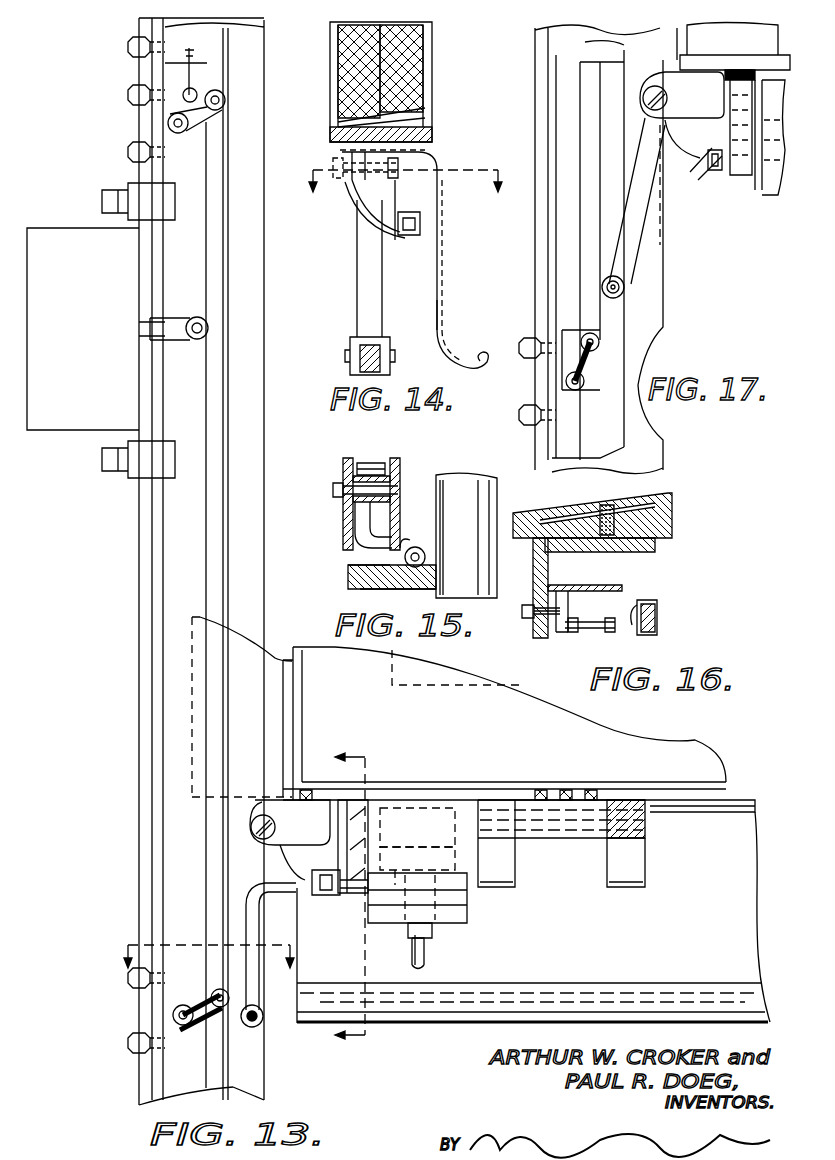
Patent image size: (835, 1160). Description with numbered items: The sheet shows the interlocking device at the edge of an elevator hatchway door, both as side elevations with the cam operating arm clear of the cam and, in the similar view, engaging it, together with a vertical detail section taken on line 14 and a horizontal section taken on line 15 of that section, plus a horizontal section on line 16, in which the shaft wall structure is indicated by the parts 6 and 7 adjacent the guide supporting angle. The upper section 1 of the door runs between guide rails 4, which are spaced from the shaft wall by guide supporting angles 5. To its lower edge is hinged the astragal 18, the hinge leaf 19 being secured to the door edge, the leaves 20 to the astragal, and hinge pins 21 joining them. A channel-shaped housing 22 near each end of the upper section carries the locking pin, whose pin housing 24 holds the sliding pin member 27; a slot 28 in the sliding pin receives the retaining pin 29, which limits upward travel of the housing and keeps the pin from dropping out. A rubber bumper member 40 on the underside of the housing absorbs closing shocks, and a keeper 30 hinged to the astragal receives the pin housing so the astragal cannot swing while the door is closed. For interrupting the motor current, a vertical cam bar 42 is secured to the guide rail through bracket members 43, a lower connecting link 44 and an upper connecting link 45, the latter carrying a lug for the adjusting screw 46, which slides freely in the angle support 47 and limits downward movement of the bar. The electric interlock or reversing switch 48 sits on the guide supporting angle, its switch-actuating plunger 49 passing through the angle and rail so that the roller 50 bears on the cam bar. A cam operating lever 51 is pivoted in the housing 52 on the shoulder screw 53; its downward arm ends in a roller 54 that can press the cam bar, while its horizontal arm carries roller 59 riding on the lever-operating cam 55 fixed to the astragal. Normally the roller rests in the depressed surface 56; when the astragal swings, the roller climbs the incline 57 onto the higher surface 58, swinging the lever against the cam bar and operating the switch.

In FIG. 13, the upper section of the door 1 is at (676, 752).
In FIG. 14, the upper section of the door 1 is at (405, 85).
In FIG. 17, the upper section of the door 1 is at (750, 48).
In FIG. 13, the guide rails 4 is at (230, 242).
In FIG. 16, the guide rails 4 is at (600, 585).
In FIG. 17, the guide rails 4 is at (615, 344).
In FIG. 13, the guide supporting angles 5 is at (264, 266).
In FIG. 16, the guide supporting angles 5 is at (533, 562).
In FIG. 17, the guide supporting angles 5 is at (655, 312).
In FIG. 16, the spring 6 is at (608, 505).
In FIG. 16, the block 7 is at (665, 518).
In FIG. 13, the section line 14— 14 is at (364, 899).
In FIG. 14, the section line 15— 15 is at (404, 173).
In FIG. 13, the section line 16— 16 is at (209, 950).
In FIG. 13, the astragal 18 is at (730, 830).
In FIG. 14, the astragal 18 is at (440, 312).
In FIG. 15, the astragal 18 is at (472, 498).
In FIG. 17, the astragal 18 is at (738, 75).
In FIG. 13, the hinge leaf 19 is at (555, 838).
In FIG. 13, the hinge leaves 20 is at (512, 878).
In FIG. 13, the hinge pins 21 is at (615, 815).
In FIG. 13, the channel-shaped housing 22 is at (440, 820).
In FIG. 13, the pin housing 24 is at (412, 940).
In FIG. 13, the sliding pin member 27 is at (424, 967).
In FIG. 13, the slot 28 is at (426, 950).
In FIG. 13, the retaining pin 29 is at (433, 930).
In FIG. 13, the keeper 30 is at (415, 832).
In FIG. 13, the rubber bumper member 40 is at (462, 912).
In FIG. 17, the rubber bumper member 40 is at (778, 200).
In FIG. 13, the vertical bar 42 is at (222, 450).
In FIG. 16, the vertical bar 42 is at (608, 615).
In FIG. 17, the vertical bar 42 is at (575, 233).
In FIG. 13, the bracket members 43 is at (168, 124).
In FIG. 16, the bracket members 43 is at (565, 632).
In FIG. 17, the bracket members 43 is at (566, 383).
In FIG. 13, the lower connecting link 44 is at (203, 1008).
In FIG. 16, the lower connecting link 44 is at (610, 630).
In FIG. 17, the lower connecting link 44 is at (590, 365).
In FIG. 13, the upper connecting link 45 is at (225, 106).
In FIG. 13, the adjusting screw 46 is at (197, 78).
In FIG. 13, the angle support 47 is at (205, 60).
In FIG. 13, the electric interlock or reversing switch 48 is at (80, 414).
In FIG. 13, the switch-actuating plunger 49 is at (183, 316).
In FIG. 13, the roller 50 is at (210, 330).
In FIG. 13, the cam operating lever 51 is at (262, 977).
In FIG. 14, the cam operating lever 51 is at (362, 262).
In FIG. 15, the cam operating lever 51 is at (360, 518).
In FIG. 16, the cam operating lever 51 is at (660, 614).
In FIG. 17, the cam operating lever 51 is at (628, 237).
In FIG. 13, the housing 52 is at (316, 825).
In FIG. 14, the housing 52 is at (342, 155).
In FIG. 15, the housing 52 is at (342, 463).
In FIG. 17, the housing 52 is at (712, 80).
In FIG. 13, the shoulder screw 53 is at (250, 827).
In FIG. 14, the shoulder screw 53 is at (345, 185).
In FIG. 15, the shoulder screw 53 is at (333, 490).
In FIG. 17, the shoulder screw 53 is at (643, 98).
In FIG. 13, the roller 54 is at (260, 1028).
In FIG. 14, the roller 54 is at (385, 352).
In FIG. 15, the roller 54 is at (375, 463).
In FIG. 16, the roller 54 is at (635, 605).
In FIG. 17, the roller 54 is at (626, 283).
In FIG. 13, the lever-operating cam 55 is at (352, 896).
In FIG. 14, the lever-operating cam 55 is at (428, 192).
In FIG. 15, the lever-operating cam 55 is at (348, 578).
In FIG. 17, the lever-operating cam 55 is at (760, 192).
In FIG. 13, the depressed surface 56 is at (380, 800).
In FIG. 15, the depressed surface 56 is at (425, 578).
In FIG. 17, the depressed surface 56 is at (722, 112).
In FIG. 15, the incline 57 is at (390, 573).
In FIG. 15, the higher surface 58 is at (358, 566).
In FIG. 17, the higher surface 58 is at (695, 168).
In FIG. 13, the roller 59 is at (318, 886).
In FIG. 14, the roller 59 is at (425, 222).
In FIG. 15, the roller 59 is at (420, 548).
In FIG. 17, the roller 59 is at (716, 178).